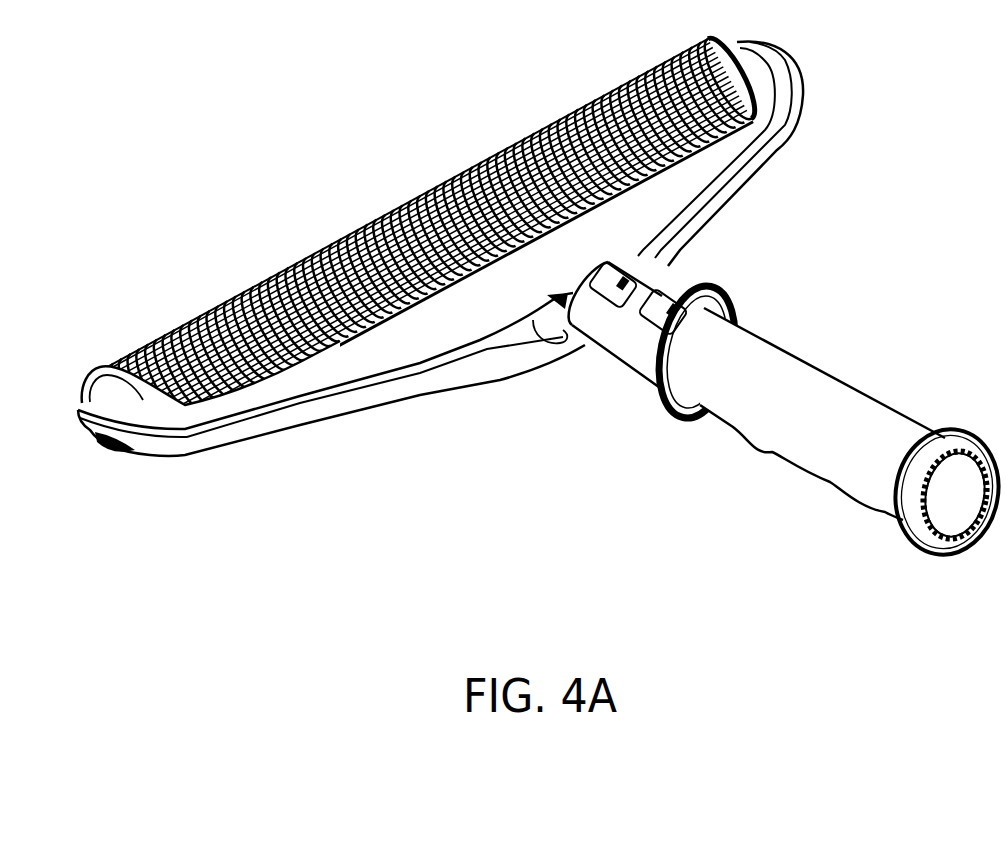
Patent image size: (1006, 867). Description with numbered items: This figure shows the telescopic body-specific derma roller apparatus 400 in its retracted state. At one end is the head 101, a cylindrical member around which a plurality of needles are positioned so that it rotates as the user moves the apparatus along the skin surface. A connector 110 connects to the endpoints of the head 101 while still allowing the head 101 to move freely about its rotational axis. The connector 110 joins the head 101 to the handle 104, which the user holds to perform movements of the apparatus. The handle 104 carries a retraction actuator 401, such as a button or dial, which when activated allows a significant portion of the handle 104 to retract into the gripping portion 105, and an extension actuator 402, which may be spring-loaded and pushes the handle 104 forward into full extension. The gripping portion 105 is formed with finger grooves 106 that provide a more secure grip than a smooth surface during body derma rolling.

The head 101 is at (382, 127).
The connector 110 is at (341, 441).
The telescopic body-specific derma roller apparatus 400 is at (662, 349).
The retraction actuator 401 is at (665, 263).
The extension actuator 402 is at (705, 289).
The handle 104 is at (843, 369).
The gripping portion 105 is at (843, 426).
The finger grooves 106 is at (837, 487).